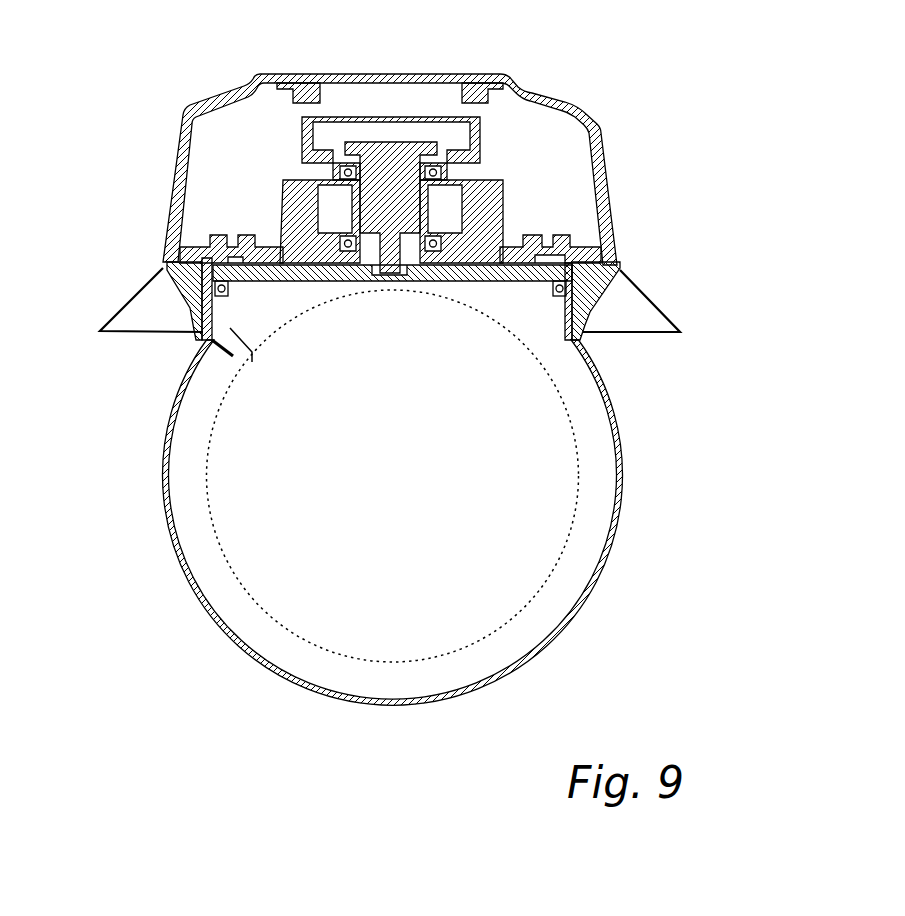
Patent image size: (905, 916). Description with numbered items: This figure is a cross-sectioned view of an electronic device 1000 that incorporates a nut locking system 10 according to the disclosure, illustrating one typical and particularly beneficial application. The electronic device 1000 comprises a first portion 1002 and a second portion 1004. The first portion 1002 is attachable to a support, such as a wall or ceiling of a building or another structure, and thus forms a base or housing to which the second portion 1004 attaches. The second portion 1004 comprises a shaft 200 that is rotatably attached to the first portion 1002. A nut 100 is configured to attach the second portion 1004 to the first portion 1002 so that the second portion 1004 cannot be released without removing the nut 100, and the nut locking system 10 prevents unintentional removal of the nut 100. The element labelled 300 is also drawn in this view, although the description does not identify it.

The electronic device 1000 is at (667, 150).
The first portion 1002 is at (563, 108).
The second portion 1004 is at (619, 461).
The nut locking system 10 is at (436, 124).
The nut 100 is at (333, 159).
The shaft 200 is at (427, 208).
The shaft 300 is at (417, 149).